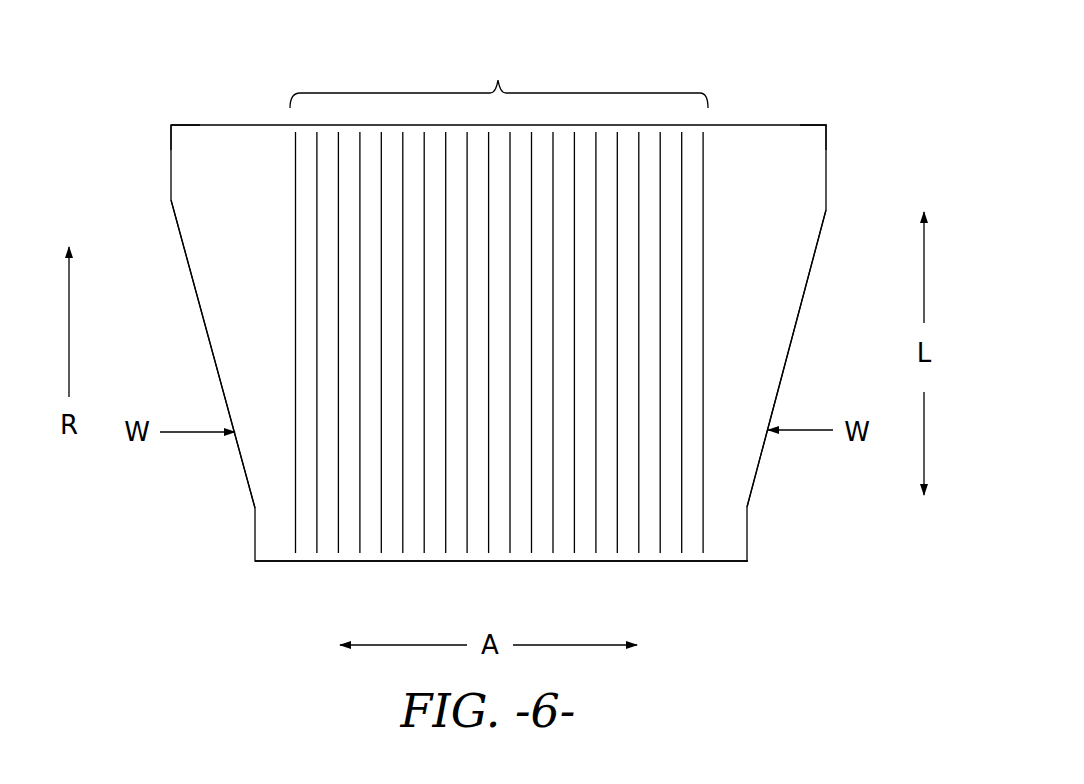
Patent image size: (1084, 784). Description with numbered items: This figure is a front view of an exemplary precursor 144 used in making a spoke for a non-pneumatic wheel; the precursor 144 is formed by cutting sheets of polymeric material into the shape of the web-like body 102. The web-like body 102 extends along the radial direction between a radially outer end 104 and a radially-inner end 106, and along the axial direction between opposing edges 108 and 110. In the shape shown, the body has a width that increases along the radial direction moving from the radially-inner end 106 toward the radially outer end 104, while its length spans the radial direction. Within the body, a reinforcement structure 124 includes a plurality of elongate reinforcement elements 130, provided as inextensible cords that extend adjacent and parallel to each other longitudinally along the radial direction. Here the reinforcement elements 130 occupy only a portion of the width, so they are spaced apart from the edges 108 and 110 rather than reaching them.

The web-like body 102 is at (803, 212).
The radially outer end 104 is at (152, 128).
The radially-inner end 106 is at (237, 562).
The edge 108 is at (207, 330).
The edge 110 is at (796, 323).
The reinforcement structure 124 is at (499, 76).
The reinforcement elements 130 is at (708, 163).
The precursor 144 is at (840, 122).